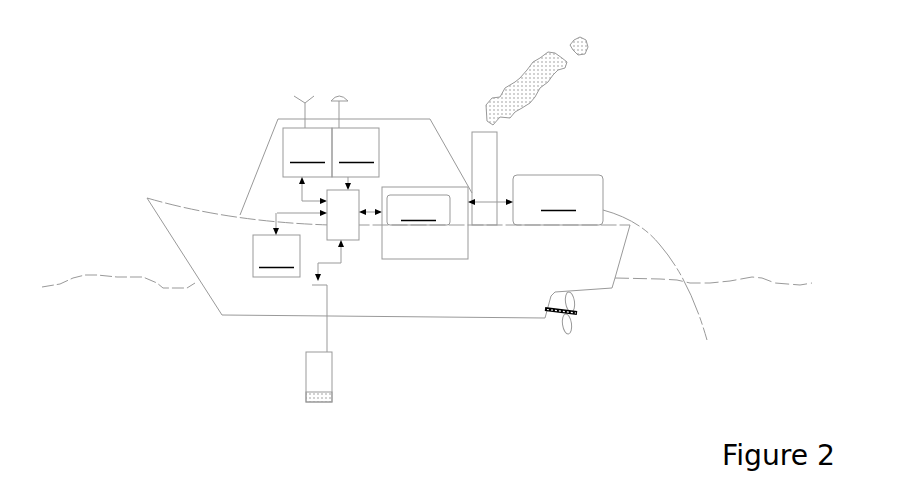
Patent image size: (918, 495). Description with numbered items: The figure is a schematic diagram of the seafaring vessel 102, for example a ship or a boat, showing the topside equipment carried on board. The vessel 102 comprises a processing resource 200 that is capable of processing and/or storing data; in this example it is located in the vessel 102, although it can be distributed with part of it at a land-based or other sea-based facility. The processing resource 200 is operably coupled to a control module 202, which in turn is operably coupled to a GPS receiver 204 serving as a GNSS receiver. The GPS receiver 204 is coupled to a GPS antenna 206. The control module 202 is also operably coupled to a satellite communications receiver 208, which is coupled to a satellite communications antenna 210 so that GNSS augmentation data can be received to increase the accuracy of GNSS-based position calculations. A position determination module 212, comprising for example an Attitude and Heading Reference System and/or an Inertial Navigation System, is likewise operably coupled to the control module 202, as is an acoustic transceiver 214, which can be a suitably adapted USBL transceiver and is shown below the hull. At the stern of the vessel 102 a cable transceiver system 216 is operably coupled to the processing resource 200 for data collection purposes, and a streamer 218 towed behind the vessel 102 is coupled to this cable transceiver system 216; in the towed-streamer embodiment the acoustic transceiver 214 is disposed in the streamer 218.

The seafaring vessel 102 is at (638, 90).
The processing resource 200 is at (425, 223).
The control module 202 is at (347, 237).
The GPS receiver 204 is at (355, 159).
The GPS antenna 206 is at (344, 97).
The satellite communications receiver 208 is at (307, 166).
The satellite communications antenna 210 is at (306, 95).
The position determination module 212 is at (276, 245).
The acoustic transceiver 214 is at (320, 377).
The cable transceiver system 216 is at (535, 200).
The streamer 218 is at (660, 238).